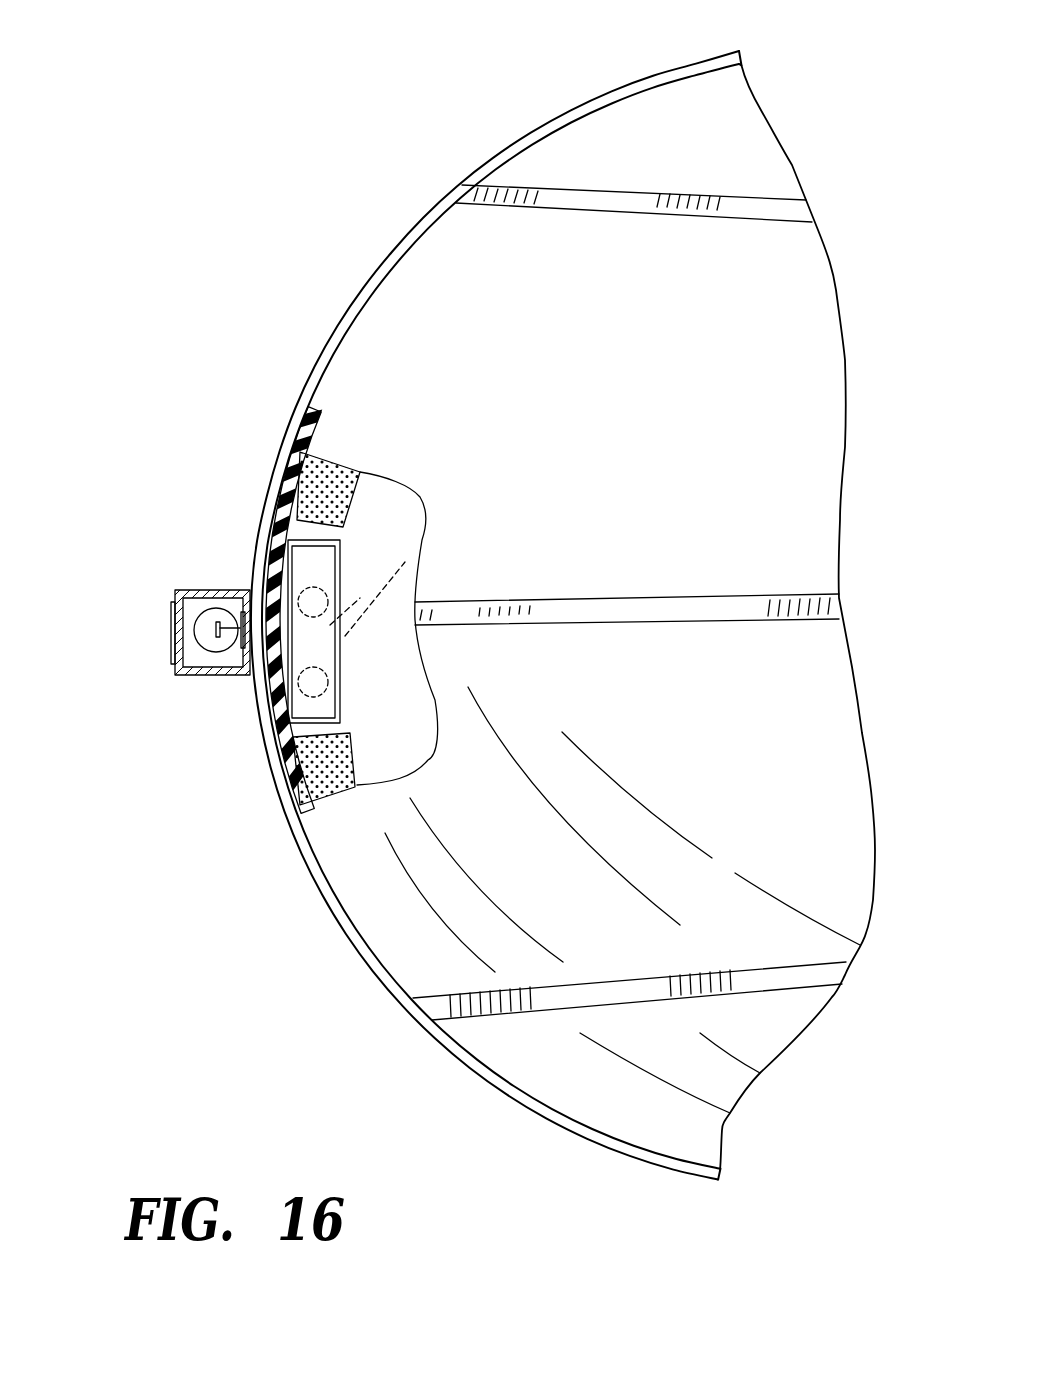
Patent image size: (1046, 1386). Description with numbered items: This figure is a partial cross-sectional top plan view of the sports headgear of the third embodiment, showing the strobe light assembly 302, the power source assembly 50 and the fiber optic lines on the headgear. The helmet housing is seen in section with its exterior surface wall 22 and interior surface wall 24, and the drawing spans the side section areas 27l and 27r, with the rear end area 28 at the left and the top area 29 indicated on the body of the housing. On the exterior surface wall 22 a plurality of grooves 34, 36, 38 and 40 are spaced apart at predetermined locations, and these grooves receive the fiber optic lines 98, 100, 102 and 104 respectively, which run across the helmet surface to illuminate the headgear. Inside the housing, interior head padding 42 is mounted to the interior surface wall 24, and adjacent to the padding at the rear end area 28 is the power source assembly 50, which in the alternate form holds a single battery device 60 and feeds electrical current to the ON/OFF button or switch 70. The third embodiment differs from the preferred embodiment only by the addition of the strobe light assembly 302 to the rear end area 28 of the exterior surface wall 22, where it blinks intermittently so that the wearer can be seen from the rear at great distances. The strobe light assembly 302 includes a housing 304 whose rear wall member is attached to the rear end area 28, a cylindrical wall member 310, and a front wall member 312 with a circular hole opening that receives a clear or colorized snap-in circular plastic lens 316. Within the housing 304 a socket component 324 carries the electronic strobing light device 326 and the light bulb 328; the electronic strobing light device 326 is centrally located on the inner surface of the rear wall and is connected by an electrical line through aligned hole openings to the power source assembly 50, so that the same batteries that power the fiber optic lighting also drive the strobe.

The exterior surface wall 22 is at (597, 412).
The interior surface wall 24 is at (355, 693).
The side section area 27l is at (702, 98).
The side section area 27r is at (676, 1118).
The rear end area 28 is at (259, 517).
The top area 29 is at (768, 393).
The groove 34 is at (410, 253).
The groove 36 is at (629, 972).
The groove 38 is at (627, 594).
The groove 40 is at (634, 203).
The interior head padding 42 is at (332, 502).
The power source assembly 50 is at (393, 588).
The single battery device 60 is at (407, 570).
The ON/OFF button or switch 70 is at (323, 713).
The fiber optic line 98 is at (412, 227).
The fiber optic line 100 is at (725, 985).
The fiber optic line 102 is at (707, 605).
The fiber optic line 104 is at (597, 200).
The strobe light assembly 302 is at (189, 610).
The housing 304 is at (217, 560).
The cylindrical wall member 310 is at (182, 672).
The front wall member 312 is at (173, 668).
The snap-in circular plastic lens 316 is at (174, 612).
The socket component 324 is at (238, 637).
The electronic strobing light device 326 is at (240, 645).
The light bulb 328 is at (212, 590).